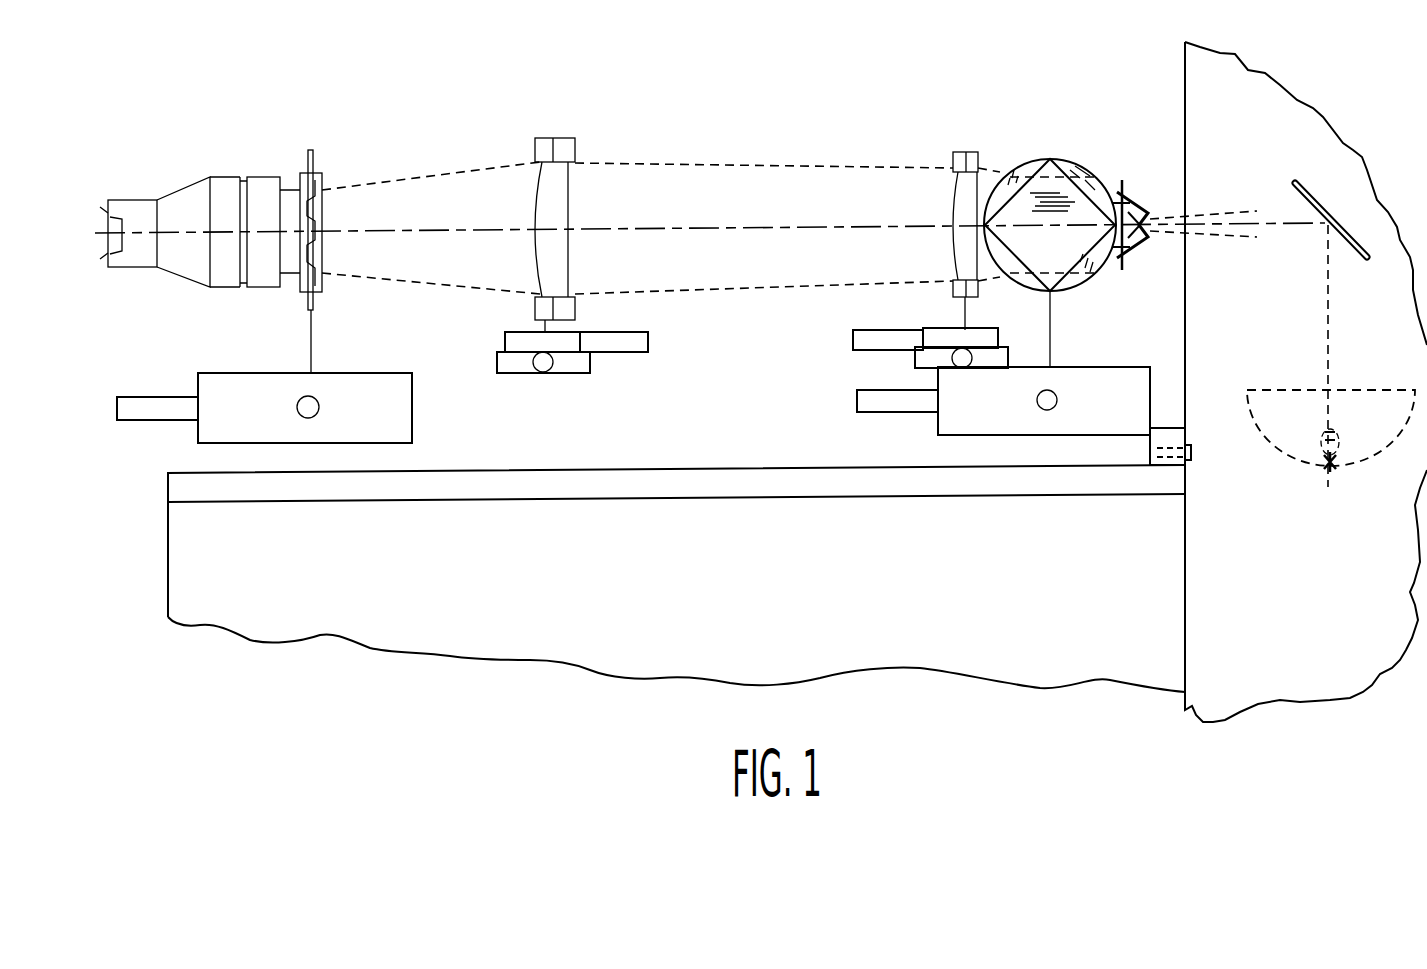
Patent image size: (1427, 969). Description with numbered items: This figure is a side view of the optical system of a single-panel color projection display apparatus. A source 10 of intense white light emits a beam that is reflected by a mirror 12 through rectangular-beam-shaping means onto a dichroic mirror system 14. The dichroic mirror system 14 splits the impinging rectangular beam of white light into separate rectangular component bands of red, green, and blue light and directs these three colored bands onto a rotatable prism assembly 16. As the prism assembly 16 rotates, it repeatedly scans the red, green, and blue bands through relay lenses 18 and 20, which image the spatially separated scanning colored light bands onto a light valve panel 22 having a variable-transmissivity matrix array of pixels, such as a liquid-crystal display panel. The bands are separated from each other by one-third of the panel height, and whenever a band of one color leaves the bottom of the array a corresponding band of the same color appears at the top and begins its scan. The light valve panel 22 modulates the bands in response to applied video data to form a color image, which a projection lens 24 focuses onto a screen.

The source of intense white light 10 is at (1270, 436).
The mirror 12 is at (1317, 201).
The dichroic mirror system 14 is at (1118, 153).
The rotatable prism assembly 16 is at (1042, 142).
The relay lens 18 is at (965, 142).
The relay lens 20 is at (546, 138).
The light valve panel 22 is at (318, 202).
The projection lens 24 is at (178, 197).